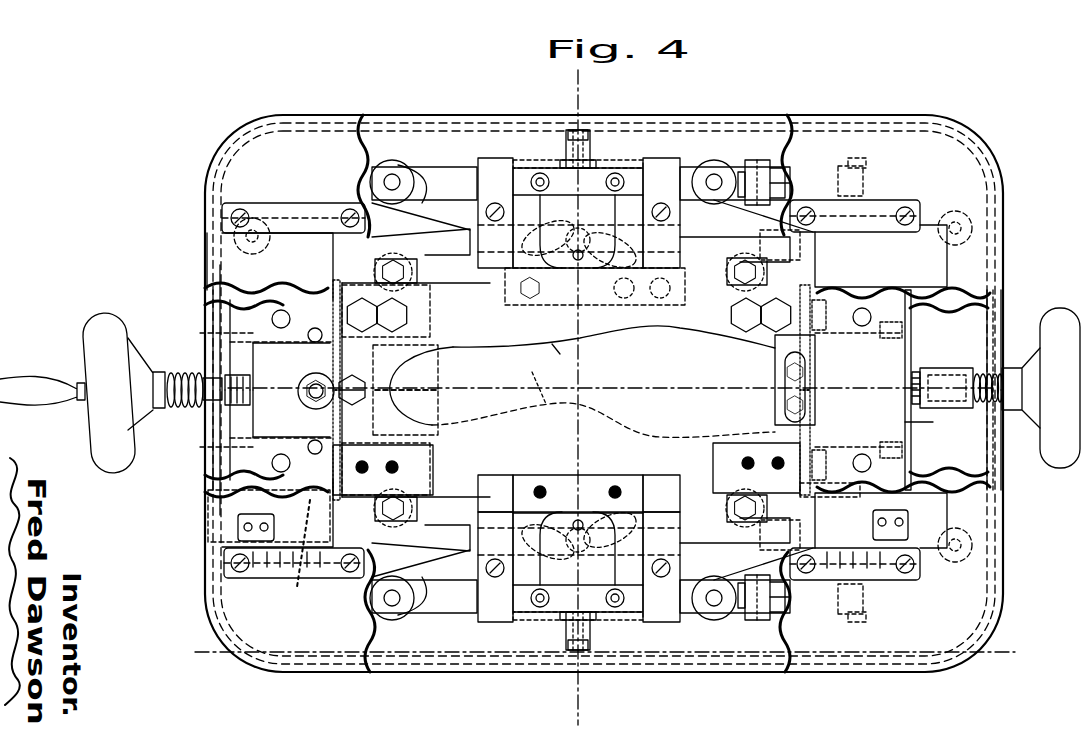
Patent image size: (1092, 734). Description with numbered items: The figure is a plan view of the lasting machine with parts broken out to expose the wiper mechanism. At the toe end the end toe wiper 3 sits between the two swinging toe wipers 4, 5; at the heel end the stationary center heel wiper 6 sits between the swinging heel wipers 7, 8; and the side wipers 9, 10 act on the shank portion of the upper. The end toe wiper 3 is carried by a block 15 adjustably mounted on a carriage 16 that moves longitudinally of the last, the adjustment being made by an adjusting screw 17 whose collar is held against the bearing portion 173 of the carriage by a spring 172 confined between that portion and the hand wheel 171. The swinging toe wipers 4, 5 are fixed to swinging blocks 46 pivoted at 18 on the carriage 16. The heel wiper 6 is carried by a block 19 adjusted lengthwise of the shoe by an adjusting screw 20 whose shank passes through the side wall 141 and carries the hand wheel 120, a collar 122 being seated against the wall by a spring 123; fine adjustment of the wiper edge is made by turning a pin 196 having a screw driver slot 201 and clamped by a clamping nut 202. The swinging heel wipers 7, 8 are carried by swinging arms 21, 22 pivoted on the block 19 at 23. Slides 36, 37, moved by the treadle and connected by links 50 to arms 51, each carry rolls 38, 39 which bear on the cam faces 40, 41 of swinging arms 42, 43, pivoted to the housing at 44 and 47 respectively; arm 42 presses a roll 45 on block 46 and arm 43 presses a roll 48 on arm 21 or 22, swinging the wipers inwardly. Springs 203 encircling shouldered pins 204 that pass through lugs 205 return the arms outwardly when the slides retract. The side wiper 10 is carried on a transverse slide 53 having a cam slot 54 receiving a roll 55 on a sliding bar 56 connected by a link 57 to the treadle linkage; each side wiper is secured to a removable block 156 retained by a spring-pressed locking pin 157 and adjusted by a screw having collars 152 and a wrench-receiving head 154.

The end toe wiper 3 is at (775, 383).
The swinging toe wiper 4 is at (706, 340).
The swinging toe wiper 5 is at (678, 436).
The center heel wiper 6 is at (396, 388).
The swinging heel wiper 7 is at (462, 370).
The swinging heel wiper 8 is at (425, 420).
The side wiper 9 is at (550, 363).
The side wiper 10 is at (526, 384).
The block 15 is at (800, 428).
The carriage 16 is at (935, 425).
The adjusting screw 17 is at (908, 370).
The pivot 18 is at (872, 320).
The block 19 is at (228, 430).
The adjusting screw 20 is at (214, 357).
The swinging arm 21 is at (213, 334).
The swinging arm 22 is at (312, 580).
The pivot 23 is at (275, 312).
The slide 36 is at (450, 170).
The slide 37 is at (445, 605).
The roll 38 is at (700, 166).
The roll 39 is at (392, 165).
The cam face 40 is at (745, 172).
The cam face 41 is at (428, 176).
The swinging arm 42 is at (712, 243).
The swinging arm 43 is at (432, 238).
The pivot 44 is at (965, 220).
The roll 45 is at (760, 272).
The swinging block 46 is at (870, 340).
The pivot 47 is at (225, 216).
The roll 48 is at (396, 258).
The link 50 is at (780, 178).
The arm 51 is at (858, 172).
The slide 53 is at (635, 585).
The cam slot 54 is at (615, 240).
The roll 55 is at (565, 240).
The sliding bar 56 is at (484, 214).
The link 57 is at (795, 205).
The hand wheel 120 is at (90, 348).
The collar 122 is at (212, 402).
The spring 123 is at (166, 366).
The side wall 141 is at (178, 412).
The collar 152 is at (592, 160).
The wrench-receiving head 154 is at (588, 135).
The block 156 is at (607, 478).
The locking pin 157 is at (582, 260).
The hand wheel 171 is at (1057, 312).
The spring 172 is at (990, 372).
The bearing portion 173 is at (944, 370).
The pin 196 is at (316, 380).
The screw driver slot 201 is at (353, 376).
The clamping nut 202 is at (300, 388).
The spring 203 is at (818, 492).
The shouldered pin 204 is at (290, 330).
The lug 205 is at (796, 496).